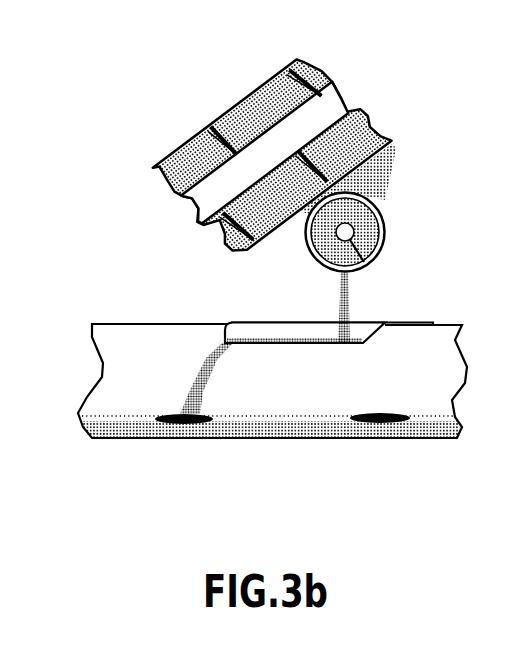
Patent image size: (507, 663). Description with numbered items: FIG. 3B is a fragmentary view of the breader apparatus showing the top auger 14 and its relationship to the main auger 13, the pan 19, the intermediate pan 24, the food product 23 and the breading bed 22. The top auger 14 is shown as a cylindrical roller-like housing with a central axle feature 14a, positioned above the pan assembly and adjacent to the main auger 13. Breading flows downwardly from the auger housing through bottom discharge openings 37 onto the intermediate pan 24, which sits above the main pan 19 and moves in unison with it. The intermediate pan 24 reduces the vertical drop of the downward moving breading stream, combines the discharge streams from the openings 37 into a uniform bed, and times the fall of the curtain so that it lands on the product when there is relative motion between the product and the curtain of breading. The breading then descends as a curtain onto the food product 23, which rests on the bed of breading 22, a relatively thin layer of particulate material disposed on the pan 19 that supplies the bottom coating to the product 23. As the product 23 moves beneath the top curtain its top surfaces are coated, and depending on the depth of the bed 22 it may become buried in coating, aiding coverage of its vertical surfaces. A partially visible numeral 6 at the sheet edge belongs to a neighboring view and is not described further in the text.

The main auger 13 is at (309, 154).
The top auger 14 is at (392, 226).
The roller axle 14a is at (417, 242).
The intermediate pan 24 is at (276, 307).
The food product 23 is at (121, 381).
The bed of breading 22 is at (235, 454).
The pan 19 is at (272, 408).
The element 6 (partial) 6 is at (3, 137).
The bottom discharge openings 37 is at (12, 307).